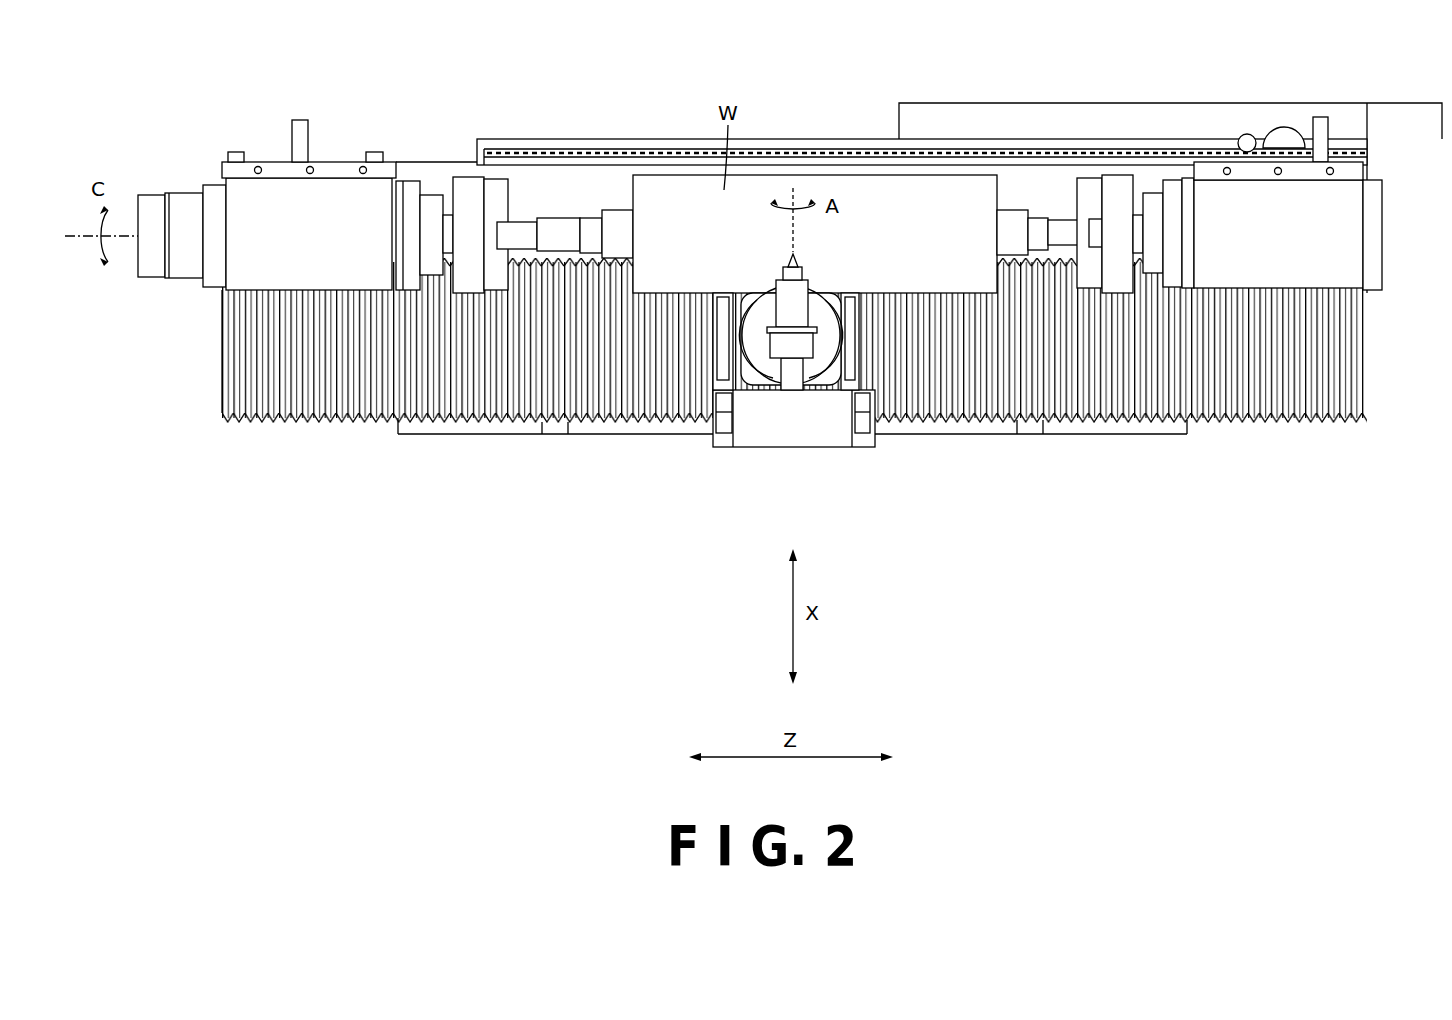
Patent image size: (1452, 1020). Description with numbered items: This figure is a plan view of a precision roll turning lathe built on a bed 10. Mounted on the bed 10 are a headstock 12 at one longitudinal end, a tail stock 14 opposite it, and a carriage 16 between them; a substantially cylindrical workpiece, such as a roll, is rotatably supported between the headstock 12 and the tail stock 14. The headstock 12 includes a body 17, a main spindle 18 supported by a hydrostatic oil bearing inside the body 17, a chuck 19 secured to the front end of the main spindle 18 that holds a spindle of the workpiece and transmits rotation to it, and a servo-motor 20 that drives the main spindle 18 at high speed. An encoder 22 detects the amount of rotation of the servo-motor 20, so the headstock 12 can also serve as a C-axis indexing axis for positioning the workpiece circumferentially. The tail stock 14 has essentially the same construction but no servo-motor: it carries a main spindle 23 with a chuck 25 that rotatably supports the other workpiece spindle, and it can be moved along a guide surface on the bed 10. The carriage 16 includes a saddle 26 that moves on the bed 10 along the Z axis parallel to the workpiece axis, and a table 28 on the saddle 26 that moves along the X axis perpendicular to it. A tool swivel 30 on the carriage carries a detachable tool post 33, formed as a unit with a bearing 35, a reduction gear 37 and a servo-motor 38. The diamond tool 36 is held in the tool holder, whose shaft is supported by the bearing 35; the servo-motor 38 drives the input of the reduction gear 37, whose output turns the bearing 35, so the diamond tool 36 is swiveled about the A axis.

The bed 10 is at (221, 396).
The headstock 12 is at (309, 191).
The tail stock 14 is at (1252, 208).
The carriage 16 is at (798, 383).
The body 17 is at (275, 193).
The main spindle 18 is at (429, 197).
The chuck 19 is at (463, 190).
The servo-motor 20 is at (187, 263).
The encoder 22 is at (150, 213).
The main spindle 23 is at (1155, 203).
The chuck 25 is at (1118, 190).
The saddle 26 is at (842, 435).
The table 28 is at (755, 382).
The tool swivel 30 is at (775, 398).
The tool post 33 is at (826, 312).
The bearing 35 is at (772, 303).
The diamond tool 36 is at (786, 262).
The reduction gear 37 is at (801, 333).
The servo-motor 38 is at (794, 378).